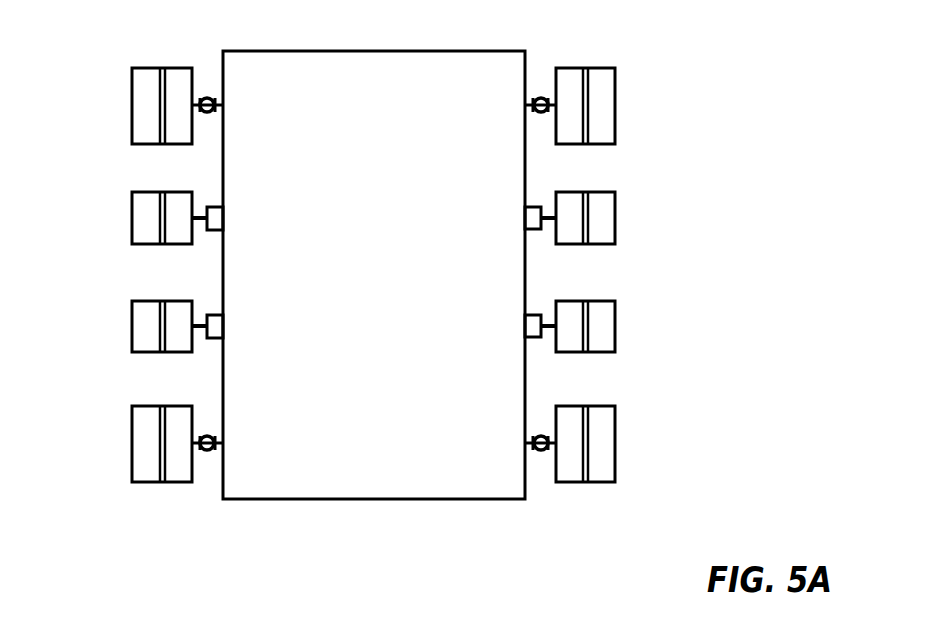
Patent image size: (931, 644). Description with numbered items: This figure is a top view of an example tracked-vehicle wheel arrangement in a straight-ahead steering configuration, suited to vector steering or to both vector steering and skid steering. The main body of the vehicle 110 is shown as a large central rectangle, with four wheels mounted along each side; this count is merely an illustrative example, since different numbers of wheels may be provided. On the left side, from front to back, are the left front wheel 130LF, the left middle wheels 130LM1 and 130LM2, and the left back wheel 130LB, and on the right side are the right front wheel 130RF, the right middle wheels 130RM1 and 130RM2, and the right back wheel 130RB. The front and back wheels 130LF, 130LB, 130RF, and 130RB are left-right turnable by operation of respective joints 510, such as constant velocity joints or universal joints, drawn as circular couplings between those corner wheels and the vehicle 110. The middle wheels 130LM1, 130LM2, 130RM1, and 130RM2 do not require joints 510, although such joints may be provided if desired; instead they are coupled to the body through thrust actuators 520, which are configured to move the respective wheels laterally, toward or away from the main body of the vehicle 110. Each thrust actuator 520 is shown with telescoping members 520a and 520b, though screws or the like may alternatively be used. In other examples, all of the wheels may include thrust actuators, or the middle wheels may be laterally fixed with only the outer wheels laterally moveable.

The vehicle 110 is at (399, 288).
The left front wheel 130LF is at (132, 104).
The left middle wheel 130LM1 is at (132, 216).
The left middle wheel 130LM2 is at (132, 324).
The left back wheel 130LB is at (132, 441).
The right front wheel 130RF is at (615, 104).
The right middle wheel 130RM1 is at (615, 216).
The right middle wheel 130RM2 is at (615, 324).
The right back wheel 130RB is at (615, 441).
The joint 510 is at (206, 92).
The thrust actuator 520 is at (208, 350).
The telescoping member 520a is at (216, 205).
The telescoping member 520b is at (203, 224).